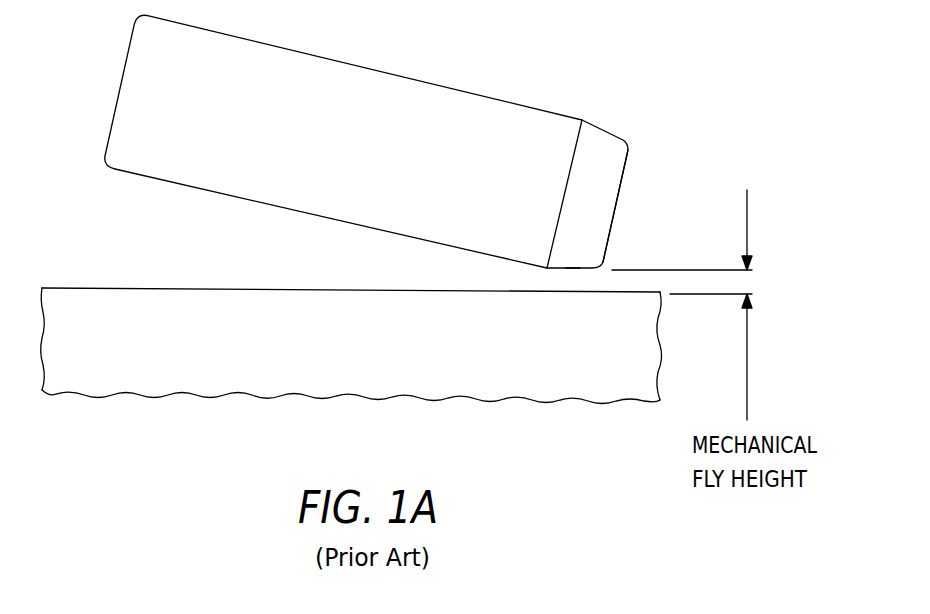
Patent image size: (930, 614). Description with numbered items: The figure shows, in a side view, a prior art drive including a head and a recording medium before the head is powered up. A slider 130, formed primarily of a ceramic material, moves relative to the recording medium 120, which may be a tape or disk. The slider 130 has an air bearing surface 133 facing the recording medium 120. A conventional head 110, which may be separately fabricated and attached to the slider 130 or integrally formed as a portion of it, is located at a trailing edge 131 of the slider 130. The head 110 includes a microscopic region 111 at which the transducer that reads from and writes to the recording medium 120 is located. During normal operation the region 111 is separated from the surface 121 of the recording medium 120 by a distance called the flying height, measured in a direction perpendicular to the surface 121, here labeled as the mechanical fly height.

The slider 130 is at (357, 63).
The trailing edge 131 is at (623, 172).
The head 110 is at (603, 215).
The region 111 is at (573, 270).
The air bearing surface 133 is at (230, 193).
The surface 121 is at (330, 287).
The recording medium 120 is at (148, 385).